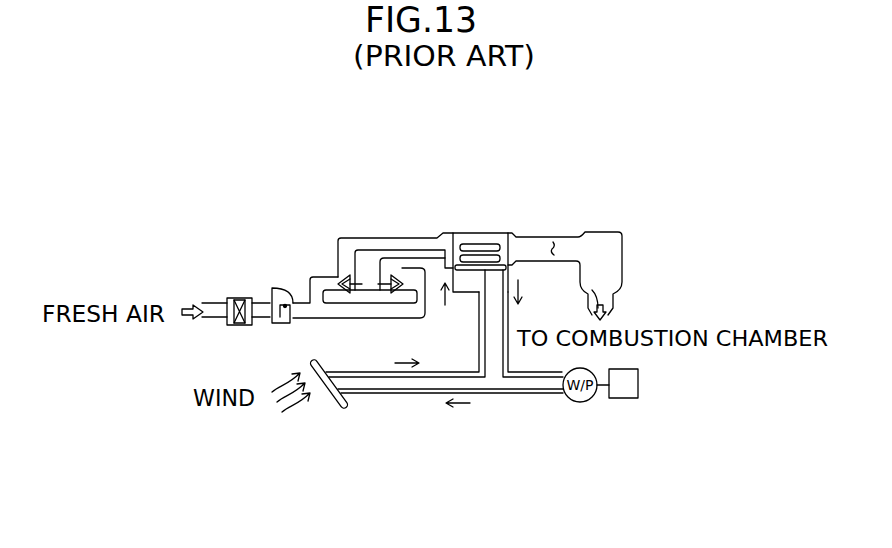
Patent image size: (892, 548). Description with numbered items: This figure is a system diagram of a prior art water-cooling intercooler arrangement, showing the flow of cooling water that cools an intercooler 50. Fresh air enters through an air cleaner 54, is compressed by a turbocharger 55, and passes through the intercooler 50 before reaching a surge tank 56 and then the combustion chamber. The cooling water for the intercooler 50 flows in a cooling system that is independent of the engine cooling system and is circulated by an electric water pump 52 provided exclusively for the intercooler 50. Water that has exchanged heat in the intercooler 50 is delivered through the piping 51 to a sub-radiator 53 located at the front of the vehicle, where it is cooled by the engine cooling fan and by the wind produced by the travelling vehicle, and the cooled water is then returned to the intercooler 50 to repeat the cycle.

The intercooler 50 is at (506, 233).
The air pipe 51 is at (486, 410).
The electric water pump 52 is at (588, 373).
The sub-radiator 53 is at (326, 392).
The air cleaner 54 is at (234, 297).
The turbocharger 55 is at (380, 270).
The surge tank 56 is at (622, 247).